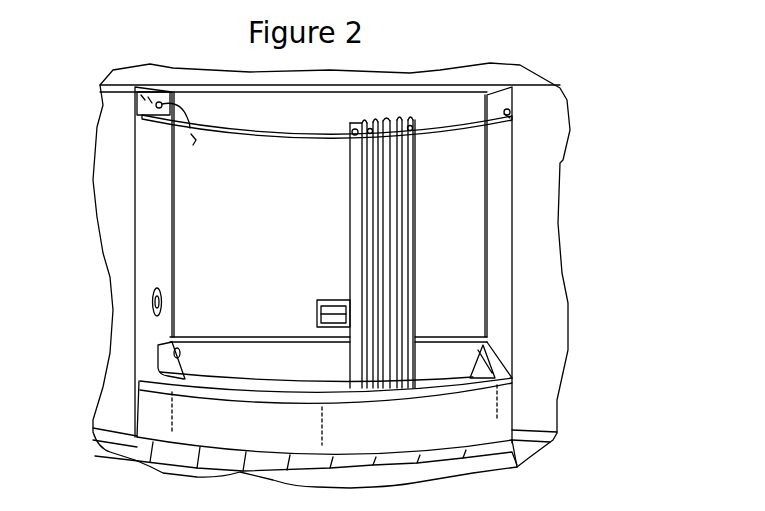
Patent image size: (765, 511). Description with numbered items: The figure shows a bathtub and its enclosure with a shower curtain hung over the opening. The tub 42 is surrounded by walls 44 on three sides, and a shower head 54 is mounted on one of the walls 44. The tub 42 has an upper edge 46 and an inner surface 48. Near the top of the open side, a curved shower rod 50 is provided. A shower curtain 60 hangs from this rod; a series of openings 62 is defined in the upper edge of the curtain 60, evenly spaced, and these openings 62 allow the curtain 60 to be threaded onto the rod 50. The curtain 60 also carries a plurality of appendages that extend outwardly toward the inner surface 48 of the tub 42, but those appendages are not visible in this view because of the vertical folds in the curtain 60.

The tub 42 is at (277, 364).
The walls 44 is at (160, 222).
The upper edge 46 is at (310, 398).
The inner surface 48 is at (193, 380).
The curved shower rod 50 is at (447, 130).
The shower head 54 is at (194, 140).
The shower curtain 60 is at (407, 252).
The openings 62 is at (413, 131).